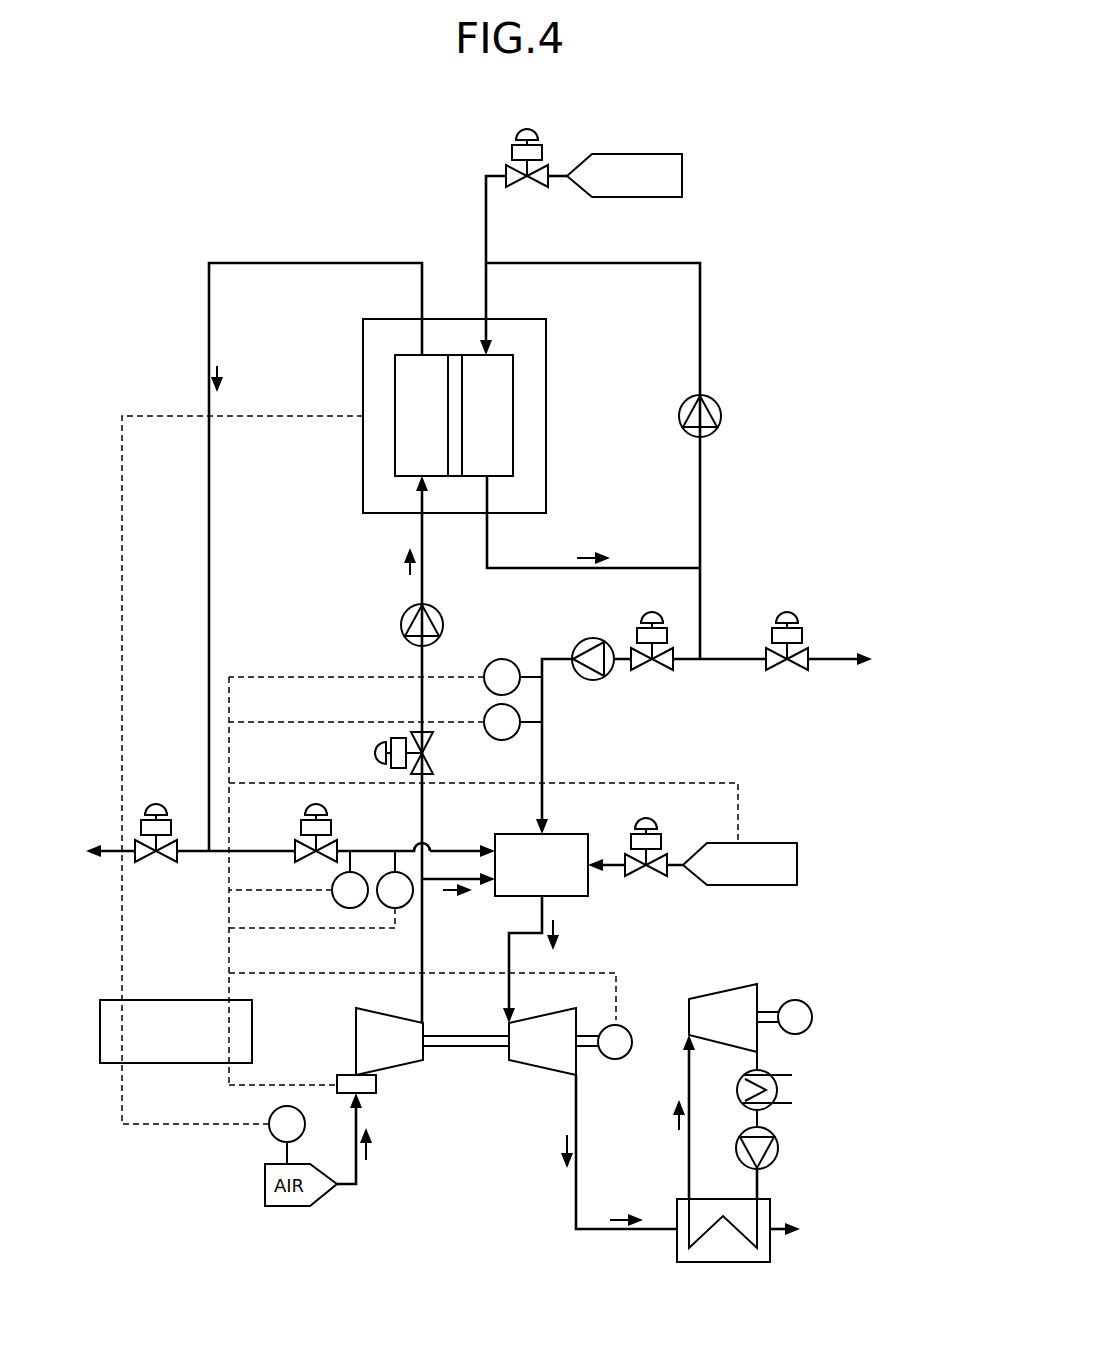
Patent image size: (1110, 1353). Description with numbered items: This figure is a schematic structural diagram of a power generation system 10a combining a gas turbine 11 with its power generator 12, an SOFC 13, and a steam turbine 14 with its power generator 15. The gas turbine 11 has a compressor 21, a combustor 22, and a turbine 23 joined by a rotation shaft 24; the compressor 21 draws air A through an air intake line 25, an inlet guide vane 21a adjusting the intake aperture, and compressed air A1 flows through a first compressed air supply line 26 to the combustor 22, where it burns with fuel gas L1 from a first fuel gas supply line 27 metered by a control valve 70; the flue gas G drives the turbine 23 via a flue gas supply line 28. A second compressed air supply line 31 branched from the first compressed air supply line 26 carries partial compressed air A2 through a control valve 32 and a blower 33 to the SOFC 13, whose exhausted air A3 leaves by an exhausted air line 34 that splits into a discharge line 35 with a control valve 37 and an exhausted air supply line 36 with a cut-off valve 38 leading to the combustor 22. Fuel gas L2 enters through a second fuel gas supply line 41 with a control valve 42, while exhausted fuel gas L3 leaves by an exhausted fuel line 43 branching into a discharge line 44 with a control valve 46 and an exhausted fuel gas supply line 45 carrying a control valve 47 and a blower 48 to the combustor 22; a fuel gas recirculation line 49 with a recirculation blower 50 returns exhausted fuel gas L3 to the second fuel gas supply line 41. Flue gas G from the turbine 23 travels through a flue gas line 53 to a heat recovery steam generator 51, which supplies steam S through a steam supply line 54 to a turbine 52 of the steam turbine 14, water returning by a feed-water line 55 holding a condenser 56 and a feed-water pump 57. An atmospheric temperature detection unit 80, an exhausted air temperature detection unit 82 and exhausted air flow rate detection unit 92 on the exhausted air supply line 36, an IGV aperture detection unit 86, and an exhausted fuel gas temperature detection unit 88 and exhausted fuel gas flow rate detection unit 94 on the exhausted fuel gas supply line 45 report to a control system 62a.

The power generation system 10a is at (786, 237).
The gas turbine 11 is at (600, 996).
The power generator 12 is at (615, 1060).
The SOFC 13 is at (552, 349).
The steam turbine 14 is at (775, 980).
The power generator 15 is at (813, 1017).
The compressor 21 is at (355, 1025).
The inlet guide vane 21a is at (377, 1084).
The combustor 22 is at (574, 833).
The turbine 23 is at (543, 1070).
The rotation shaft 24 is at (464, 1050).
The air intake line 25 is at (355, 1153).
The first compressed air supply line 26 is at (464, 849).
The first fuel gas supply line 27 is at (613, 862).
The flue gas supply line 28 is at (522, 933).
The second compressed air supply line 31 is at (424, 587).
The control valve 32 is at (373, 752).
The blower 33 is at (443, 625).
The exhausted air line 34 is at (208, 631).
The discharge line 35 is at (187, 855).
The exhausted air supply line 36 is at (255, 849).
The control valve 37 is at (156, 802).
The cut-off valve 38 is at (326, 804).
The second fuel gas supply line 41 is at (486, 206).
The control valve 42 is at (527, 127).
The exhausted fuel line 43 is at (647, 567).
The discharge line 44 is at (838, 658).
The exhausted fuel gas supply line 45 is at (550, 658).
The control valve 46 is at (787, 610).
The control valve 47 is at (652, 610).
The blower 48 is at (592, 638).
The fuel gas recirculation line 49 is at (702, 327).
The recirculation blower 50 is at (721, 416).
The heat recovery steam generator 51 is at (721, 1264).
The turbine 52 is at (688, 1019).
The flue gas line 53 is at (624, 1232).
The steam supply line 54 is at (689, 1166).
The feed-water line 55 is at (760, 1183).
The condenser 56 is at (769, 1067).
The feed-water pump 57 is at (778, 1148).
The control system 62a is at (175, 999).
The control valve 70 is at (646, 816).
The atmospheric temperature detection unit 80 is at (269, 1114).
The exhausted air temperature detection unit 82 is at (333, 904).
The IGV aperture detection unit 86 is at (337, 1071).
The exhausted fuel gas temperature detection unit 88 is at (485, 665).
The exhausted air flow rate detection unit 92 is at (410, 906).
The exhausted fuel gas flow rate detection unit 94 is at (485, 710).
The fuel gas L1 is at (777, 842).
The fuel gas L2 is at (637, 153).
The exhausted fuel gas L3 is at (584, 558).
The air A is at (367, 1147).
The compressed air A1 is at (449, 891).
The partial compressed air A2 is at (409, 568).
The exhausted air A3 is at (218, 369).
The flue gas G is at (555, 929).
The steam S is at (678, 1130).